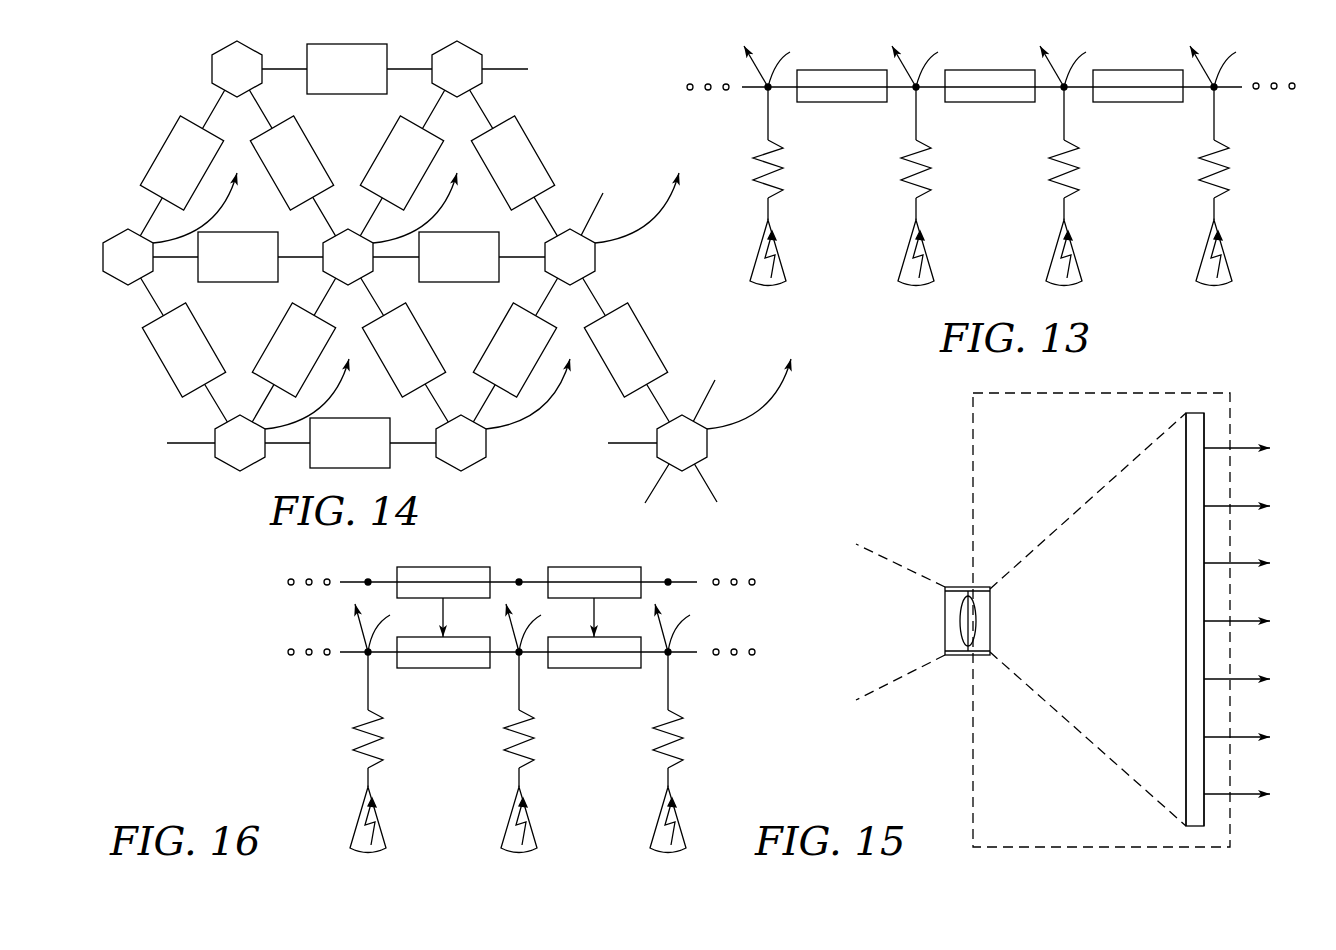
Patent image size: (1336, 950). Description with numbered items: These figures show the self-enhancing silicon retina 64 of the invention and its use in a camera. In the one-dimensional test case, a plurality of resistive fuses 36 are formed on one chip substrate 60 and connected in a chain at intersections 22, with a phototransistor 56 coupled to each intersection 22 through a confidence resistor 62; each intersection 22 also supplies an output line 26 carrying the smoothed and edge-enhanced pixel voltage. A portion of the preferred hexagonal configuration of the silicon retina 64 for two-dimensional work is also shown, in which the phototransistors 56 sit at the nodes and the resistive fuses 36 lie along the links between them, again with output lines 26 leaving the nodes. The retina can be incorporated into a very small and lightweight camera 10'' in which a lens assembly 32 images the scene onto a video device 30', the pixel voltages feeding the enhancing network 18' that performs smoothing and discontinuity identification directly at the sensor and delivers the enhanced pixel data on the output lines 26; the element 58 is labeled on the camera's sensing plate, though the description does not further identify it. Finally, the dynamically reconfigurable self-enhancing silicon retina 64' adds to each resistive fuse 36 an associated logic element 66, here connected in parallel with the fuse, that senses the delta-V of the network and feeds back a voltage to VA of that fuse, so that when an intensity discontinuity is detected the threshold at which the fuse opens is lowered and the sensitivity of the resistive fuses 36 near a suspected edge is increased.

In FIG. 15, the camera 10'' is at (1045, 620).
In FIG. 15, the enhancing network 18' is at (1128, 658).
In FIG. 13, the intersections 22 is at (1016, 65).
In FIG. 16, the intersections 22 is at (545, 617).
In FIG. 13, the output lines 26 is at (753, 68).
In FIG. 14, the output lines 26 is at (218, 203).
In FIG. 15, the output lines 26 is at (1245, 447).
In FIG. 16, the output lines 26 is at (361, 632).
In FIG. 15, the video device 30' is at (1021, 619).
In FIG. 15, the lens assembly 32 is at (953, 575).
In FIG. 13, the resistive fuse 36 is at (820, 103).
In FIG. 14, the resistive fuse 36 is at (403, 256).
In FIG. 15, the resistive fuse 36 is at (1186, 543).
In FIG. 16, the resistive fuse 36 is at (424, 668).
In FIG. 13, the phototransistors 56 is at (781, 243).
In FIG. 14, the phototransistors 56 is at (405, 256).
In FIG. 15, the phototransistors 56 is at (1186, 610).
In FIG. 16, the phototransistors 56 is at (381, 810).
In FIG. 15, the substrate 58 is at (1197, 693).
In FIG. 13, the chip substrate 60 is at (841, 280).
In FIG. 14, the chip substrate 60 is at (561, 480).
In FIG. 16, the chip substrate 60 is at (444, 847).
In FIG. 13, the confidence resistors 62 is at (784, 166).
In FIG. 16, the confidence resistors 62 is at (384, 735).
In FIG. 13, the self-enhancing silicon retina 64 is at (989, 112).
In FIG. 14, the self-enhancing silicon retina 64 is at (420, 283).
In FIG. 16, the dynamically reconfigurable self-enhancing silicon retina 64' is at (516, 642).
In FIG. 16, the logic element 66 is at (435, 567).